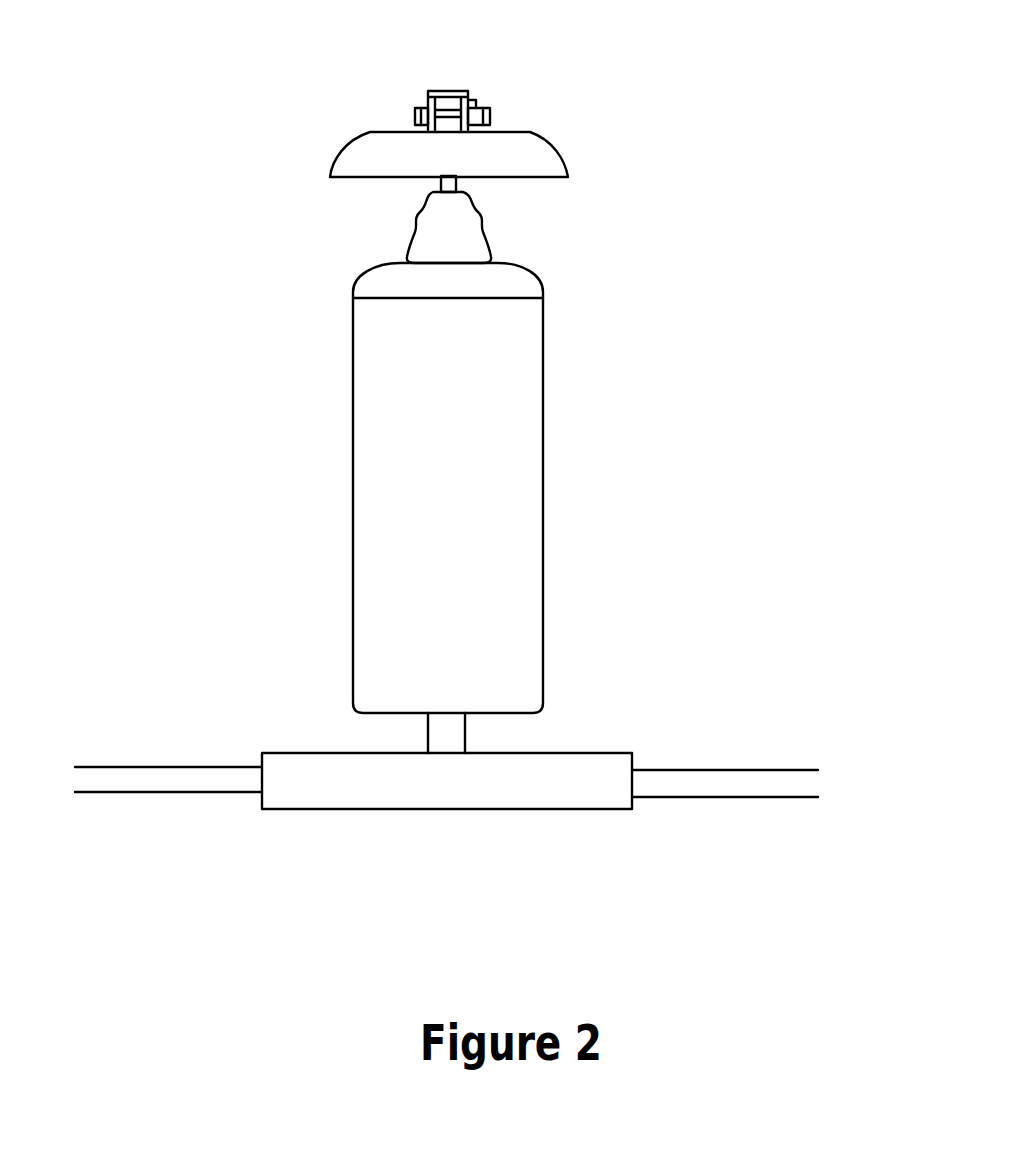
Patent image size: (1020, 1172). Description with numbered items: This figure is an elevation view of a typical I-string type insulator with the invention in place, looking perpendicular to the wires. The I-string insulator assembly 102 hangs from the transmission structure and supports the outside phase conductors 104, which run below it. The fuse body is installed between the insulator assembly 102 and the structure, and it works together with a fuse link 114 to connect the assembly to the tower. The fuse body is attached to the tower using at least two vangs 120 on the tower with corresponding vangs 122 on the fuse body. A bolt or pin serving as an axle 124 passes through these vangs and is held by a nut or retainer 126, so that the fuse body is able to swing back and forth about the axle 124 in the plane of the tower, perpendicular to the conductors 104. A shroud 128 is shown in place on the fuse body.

The I-string insulator assembly 102 is at (535, 463).
The outside phase conductor 104 is at (135, 770).
The fuse link 114 is at (458, 187).
The vang on the tower 120 is at (428, 90).
The vang on the fuse body 122 is at (415, 120).
The axle 124 is at (448, 128).
The nut or retainer 126 is at (477, 107).
The shroud 128 is at (330, 176).